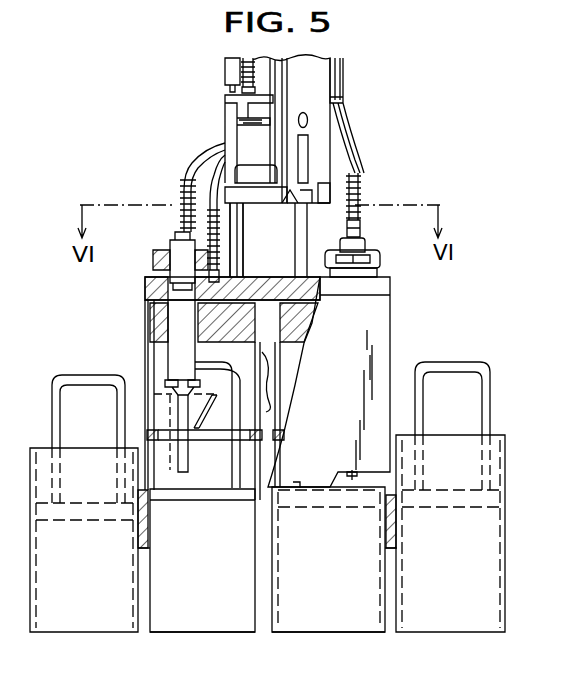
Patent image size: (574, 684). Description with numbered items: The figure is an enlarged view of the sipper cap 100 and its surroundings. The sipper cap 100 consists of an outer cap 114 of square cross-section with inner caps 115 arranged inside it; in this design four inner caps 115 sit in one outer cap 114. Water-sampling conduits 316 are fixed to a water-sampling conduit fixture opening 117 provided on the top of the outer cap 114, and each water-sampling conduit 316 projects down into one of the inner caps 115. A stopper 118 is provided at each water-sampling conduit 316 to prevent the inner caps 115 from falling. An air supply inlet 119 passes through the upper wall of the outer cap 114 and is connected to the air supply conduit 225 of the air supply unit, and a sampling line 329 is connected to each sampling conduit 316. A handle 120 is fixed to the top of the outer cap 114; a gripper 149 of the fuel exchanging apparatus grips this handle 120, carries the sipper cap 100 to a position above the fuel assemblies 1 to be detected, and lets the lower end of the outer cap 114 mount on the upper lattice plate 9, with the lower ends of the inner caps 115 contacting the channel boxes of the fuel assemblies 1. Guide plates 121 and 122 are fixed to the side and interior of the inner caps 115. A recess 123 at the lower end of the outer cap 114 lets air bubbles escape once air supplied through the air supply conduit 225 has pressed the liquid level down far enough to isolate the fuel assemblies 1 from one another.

The fuel assembly 1 is at (232, 615).
The upper lattice plate 9 is at (140, 530).
The sipper cap 100 is at (461, 309).
The outer cap 114 is at (148, 295).
The inner cap 115 is at (148, 348).
The water-sampling conduit fixture opening 117 is at (381, 262).
The stopper 118 is at (167, 384).
The air supply inlet 119 is at (240, 278).
The handle 120 is at (292, 228).
The guide plate 121 is at (263, 412).
The guide plate 122 is at (200, 400).
The recess 123 is at (396, 478).
The gripper 149 is at (328, 147).
The air supply conduit 225 is at (210, 153).
The water-sampling conduit 316 is at (178, 243).
The sampling line 329 is at (230, 138).